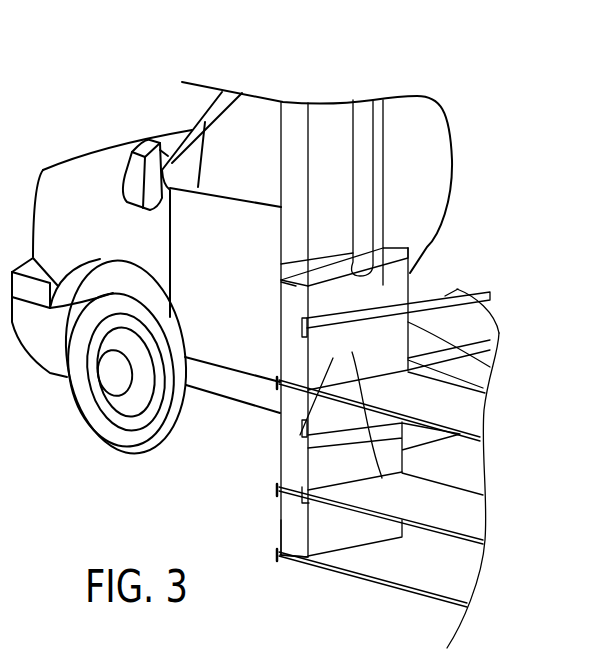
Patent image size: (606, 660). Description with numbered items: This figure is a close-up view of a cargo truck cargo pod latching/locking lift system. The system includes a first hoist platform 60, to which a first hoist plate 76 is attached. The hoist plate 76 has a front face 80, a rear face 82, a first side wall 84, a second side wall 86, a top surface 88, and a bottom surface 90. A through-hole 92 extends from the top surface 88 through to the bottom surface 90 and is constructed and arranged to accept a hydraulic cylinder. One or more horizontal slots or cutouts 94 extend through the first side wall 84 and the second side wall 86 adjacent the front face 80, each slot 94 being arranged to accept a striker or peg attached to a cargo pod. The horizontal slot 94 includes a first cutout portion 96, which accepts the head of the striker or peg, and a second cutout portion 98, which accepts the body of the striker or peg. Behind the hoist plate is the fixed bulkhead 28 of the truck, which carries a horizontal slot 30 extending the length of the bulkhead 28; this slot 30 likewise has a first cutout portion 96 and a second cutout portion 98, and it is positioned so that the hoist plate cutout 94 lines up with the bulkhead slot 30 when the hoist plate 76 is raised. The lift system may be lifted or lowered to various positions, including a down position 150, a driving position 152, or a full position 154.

The fixed bulkhead 28 is at (330, 128).
The horizontal slot 30 is at (466, 288).
The first hoist platform 60 is at (460, 402).
The first hoist plate 76 is at (390, 285).
The front face 80 is at (300, 435).
The rear face 82 is at (278, 298).
The first side wall 84 is at (293, 360).
The second side wall 86 is at (438, 297).
The top surface 88 is at (298, 275).
The bottom surface 90 is at (380, 477).
The through-hole 92 is at (352, 263).
The horizontal slot 94 is at (490, 369).
The first cutout portion 96 is at (458, 288).
The second cutout portion 98 is at (500, 322).
The down position 150 is at (275, 534).
The driving position 152 is at (300, 428).
The full position 154 is at (300, 323).